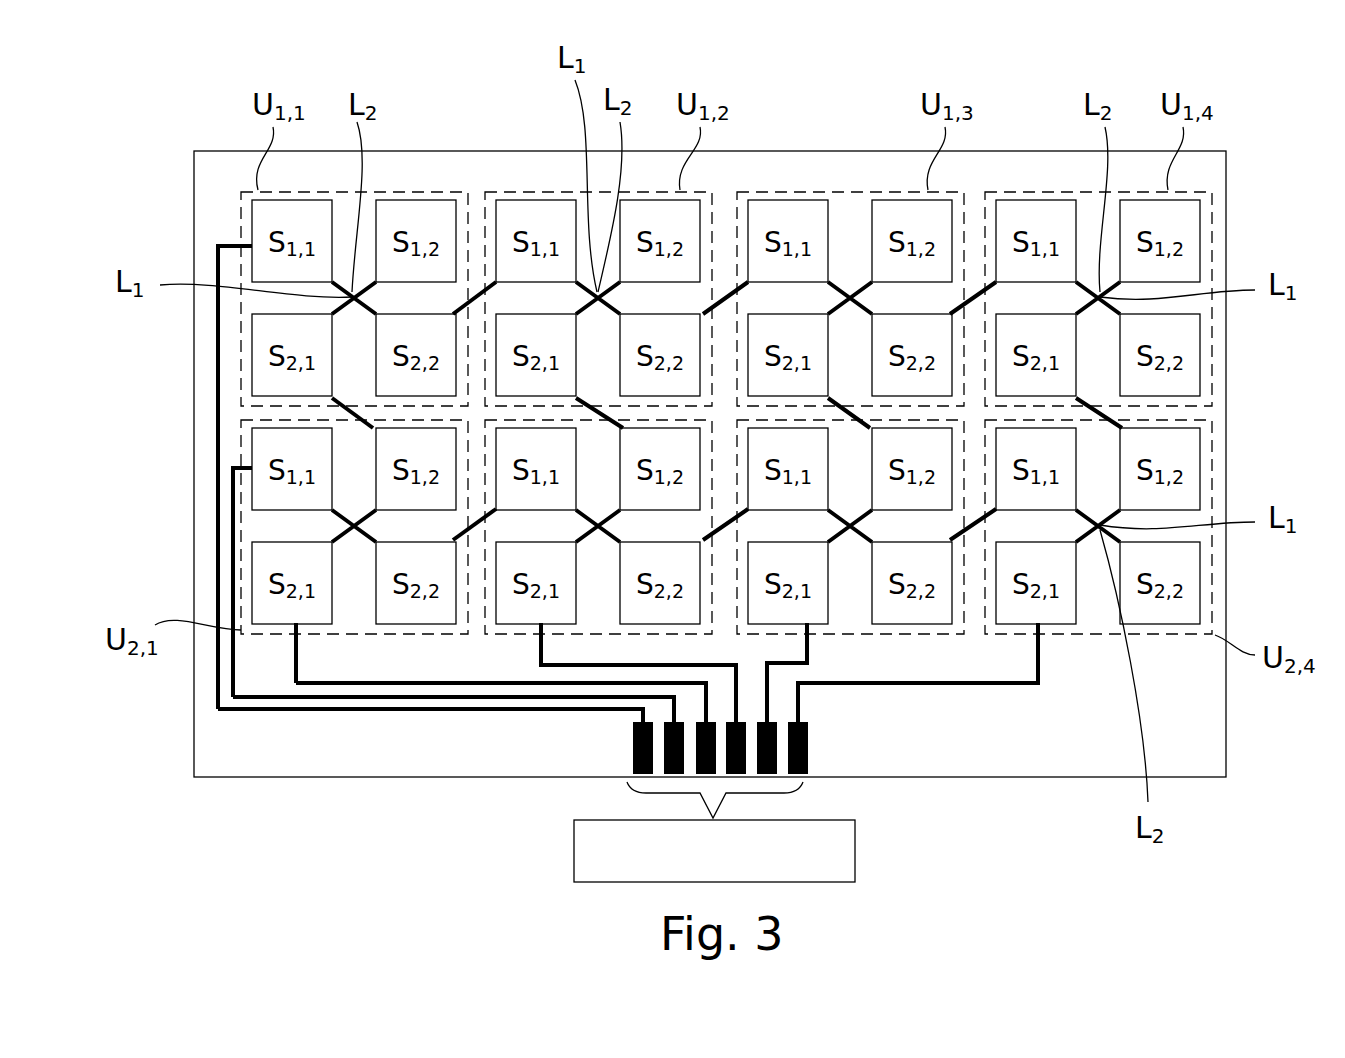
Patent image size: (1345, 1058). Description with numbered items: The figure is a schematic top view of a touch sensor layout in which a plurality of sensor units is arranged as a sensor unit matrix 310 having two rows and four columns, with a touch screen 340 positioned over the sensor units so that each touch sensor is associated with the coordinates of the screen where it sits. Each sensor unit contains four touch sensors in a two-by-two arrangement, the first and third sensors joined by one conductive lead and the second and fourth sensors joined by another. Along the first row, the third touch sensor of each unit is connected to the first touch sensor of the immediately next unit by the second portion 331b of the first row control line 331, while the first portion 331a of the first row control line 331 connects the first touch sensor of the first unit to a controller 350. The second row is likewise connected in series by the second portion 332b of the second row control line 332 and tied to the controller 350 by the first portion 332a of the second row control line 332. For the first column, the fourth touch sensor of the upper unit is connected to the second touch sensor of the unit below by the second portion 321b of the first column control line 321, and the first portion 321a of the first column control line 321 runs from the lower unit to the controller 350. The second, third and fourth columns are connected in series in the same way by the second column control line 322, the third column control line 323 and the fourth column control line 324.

The sensor unit matrix 310 is at (768, 172).
The touch screen 340 is at (1007, 165).
The controller 350 is at (826, 860).
The first column control line 321 is at (415, 683).
The first portion of the first column control line 321a is at (296, 652).
The second portion of the first column control line 321b is at (345, 408).
The second column control line 322 is at (570, 665).
The third column control line 323 is at (812, 667).
The fourth column control line 324 is at (1040, 688).
The first row control line 331 is at (245, 709).
The first portion of the first row control line 331a is at (218, 350).
The second portion of the first row control line 331b is at (488, 285).
The second row control line 332 is at (318, 697).
The first portion of the second row control line 332a is at (233, 528).
The second portion of the second row control line 332b is at (480, 522).